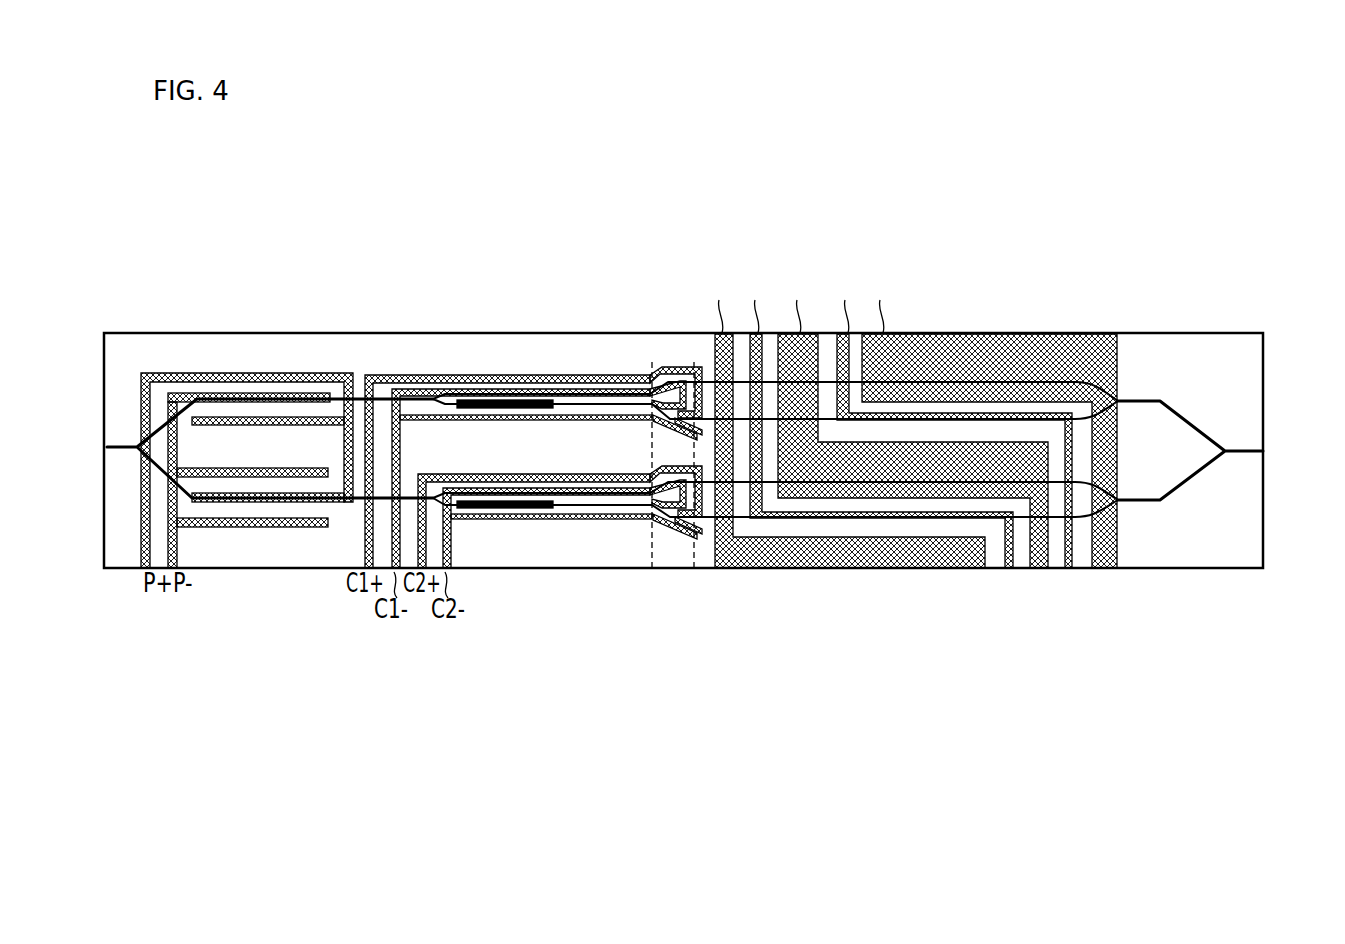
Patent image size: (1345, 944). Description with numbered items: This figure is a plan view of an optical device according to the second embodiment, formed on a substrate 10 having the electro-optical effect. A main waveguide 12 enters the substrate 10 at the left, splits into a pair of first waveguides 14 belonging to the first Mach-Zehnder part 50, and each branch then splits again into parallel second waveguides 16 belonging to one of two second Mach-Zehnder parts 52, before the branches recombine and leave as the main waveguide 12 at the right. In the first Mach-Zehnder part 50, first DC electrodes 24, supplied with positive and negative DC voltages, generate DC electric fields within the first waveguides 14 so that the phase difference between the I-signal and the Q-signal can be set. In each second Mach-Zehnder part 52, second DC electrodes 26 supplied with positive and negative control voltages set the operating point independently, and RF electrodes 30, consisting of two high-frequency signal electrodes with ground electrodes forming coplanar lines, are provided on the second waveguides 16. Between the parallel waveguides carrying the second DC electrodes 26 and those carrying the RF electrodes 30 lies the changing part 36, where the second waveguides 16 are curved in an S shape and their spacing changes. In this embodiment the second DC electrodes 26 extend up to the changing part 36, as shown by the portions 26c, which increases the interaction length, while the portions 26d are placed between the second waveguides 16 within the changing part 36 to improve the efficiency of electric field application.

The substrate 10 is at (1263, 515).
The main waveguide 12 is at (118, 440).
The first waveguides 14 is at (275, 393).
The second waveguides 16 is at (490, 389).
The first DC electrodes 24 is at (224, 373).
The second DC electrodes 26 is at (423, 374).
The second DC electrodes extending to the changing part 26c is at (664, 365).
The second DC electrodes between the second waveguides in the changing part 26d is at (678, 428).
The RF electrodes 30 is at (902, 265).
The changing part 36 is at (700, 573).
The first Mach-Zehnder part 50 is at (415, 671).
The second Mach-Zehnder parts 52 is at (1125, 671).